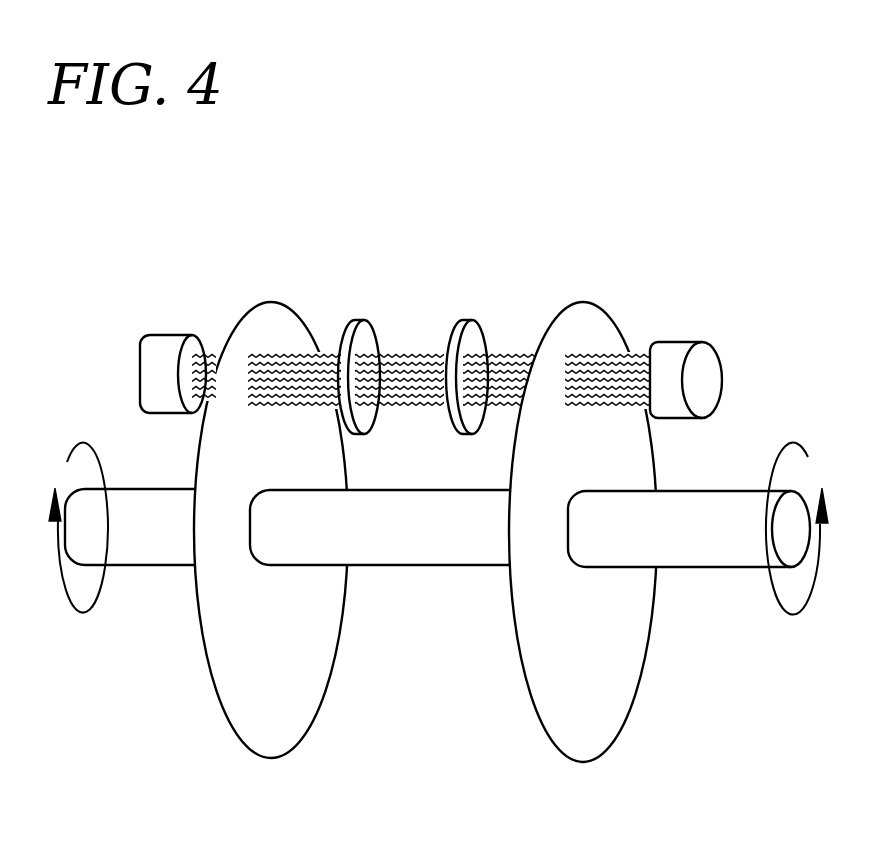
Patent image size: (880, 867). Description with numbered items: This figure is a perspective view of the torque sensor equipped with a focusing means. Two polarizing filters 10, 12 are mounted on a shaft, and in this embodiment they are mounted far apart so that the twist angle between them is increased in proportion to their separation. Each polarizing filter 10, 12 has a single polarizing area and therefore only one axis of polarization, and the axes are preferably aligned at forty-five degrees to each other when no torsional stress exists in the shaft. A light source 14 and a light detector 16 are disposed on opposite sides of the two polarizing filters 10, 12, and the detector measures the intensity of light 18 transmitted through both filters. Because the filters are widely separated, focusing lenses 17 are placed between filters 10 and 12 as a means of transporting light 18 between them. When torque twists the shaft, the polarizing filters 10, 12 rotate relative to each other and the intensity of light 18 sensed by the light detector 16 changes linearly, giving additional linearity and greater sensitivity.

The polarizing filter 10 is at (288, 703).
The polarizing filter 12 is at (599, 691).
The light source 14 is at (712, 382).
The light detector 16 is at (140, 370).
The focusing lenses 17 is at (457, 318).
The light 18 is at (630, 357).